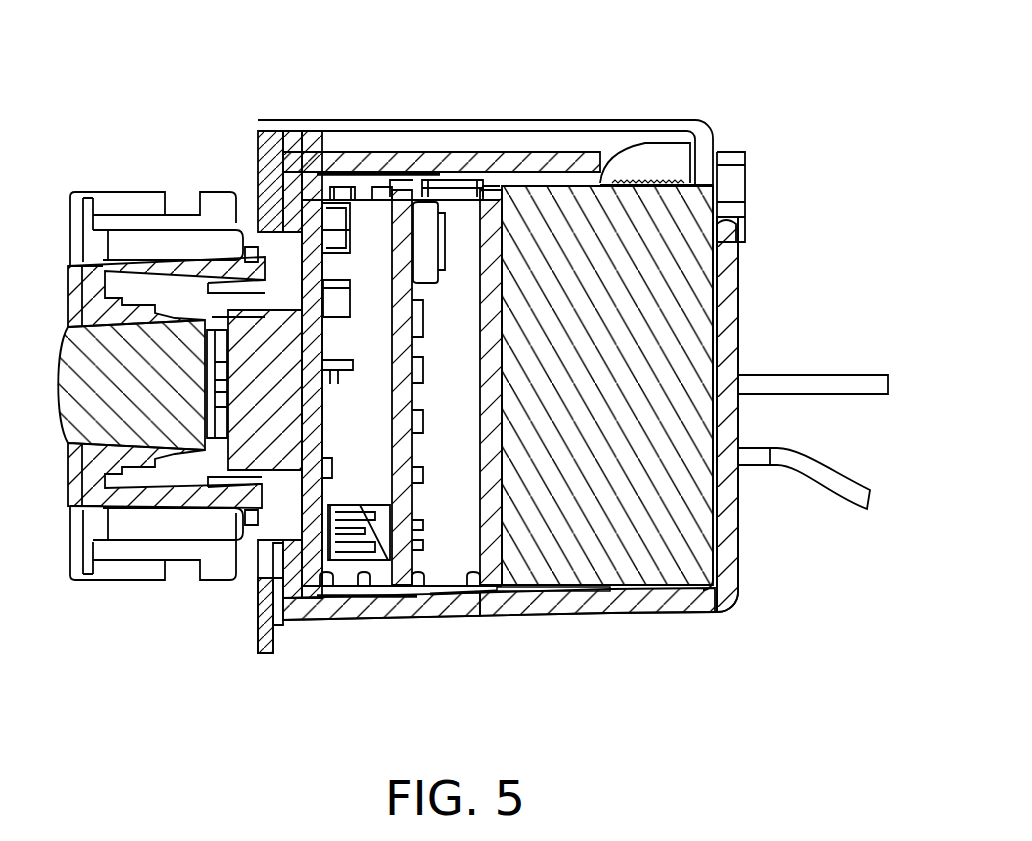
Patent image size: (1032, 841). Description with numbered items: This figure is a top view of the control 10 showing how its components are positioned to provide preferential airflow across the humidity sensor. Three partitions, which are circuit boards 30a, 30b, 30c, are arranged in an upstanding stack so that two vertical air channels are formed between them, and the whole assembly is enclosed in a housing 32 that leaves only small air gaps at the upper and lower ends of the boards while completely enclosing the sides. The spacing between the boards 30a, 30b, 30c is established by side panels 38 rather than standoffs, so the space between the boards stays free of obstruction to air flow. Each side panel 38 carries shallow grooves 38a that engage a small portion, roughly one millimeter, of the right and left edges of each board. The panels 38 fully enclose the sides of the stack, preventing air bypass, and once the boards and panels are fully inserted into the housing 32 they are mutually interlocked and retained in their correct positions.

The control 10 is at (758, 88).
The housing 32 is at (613, 123).
The circuit board 30a is at (313, 200).
The circuit board 30b is at (408, 574).
The circuit board 30c is at (498, 596).
The side panel 38 is at (460, 182).
The shallow groove 38a is at (410, 190).